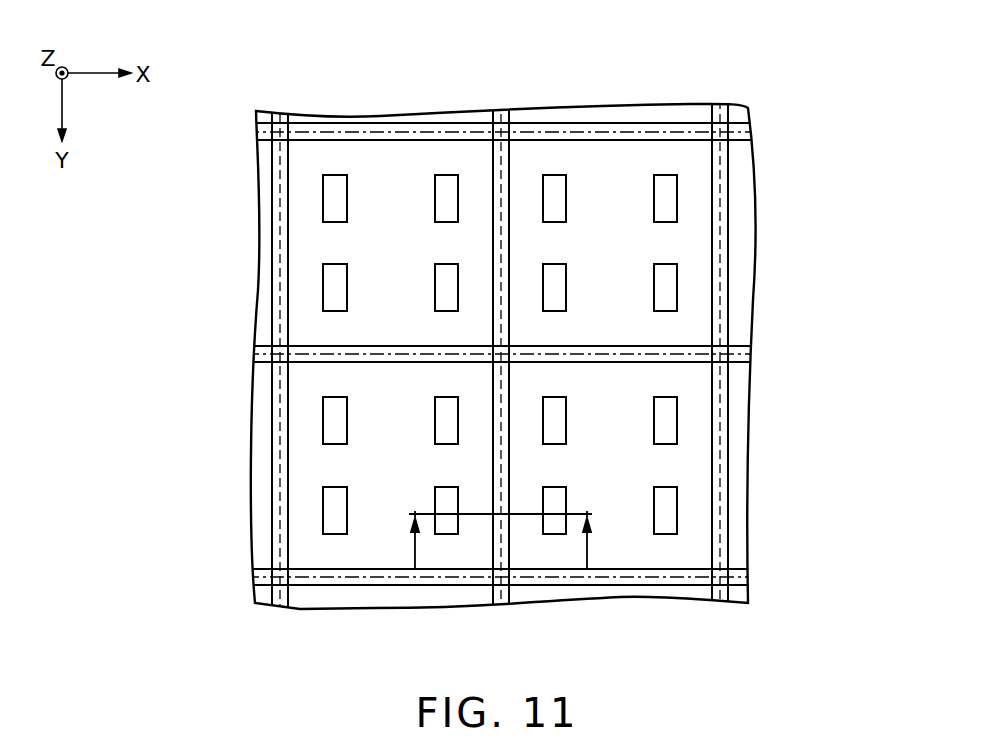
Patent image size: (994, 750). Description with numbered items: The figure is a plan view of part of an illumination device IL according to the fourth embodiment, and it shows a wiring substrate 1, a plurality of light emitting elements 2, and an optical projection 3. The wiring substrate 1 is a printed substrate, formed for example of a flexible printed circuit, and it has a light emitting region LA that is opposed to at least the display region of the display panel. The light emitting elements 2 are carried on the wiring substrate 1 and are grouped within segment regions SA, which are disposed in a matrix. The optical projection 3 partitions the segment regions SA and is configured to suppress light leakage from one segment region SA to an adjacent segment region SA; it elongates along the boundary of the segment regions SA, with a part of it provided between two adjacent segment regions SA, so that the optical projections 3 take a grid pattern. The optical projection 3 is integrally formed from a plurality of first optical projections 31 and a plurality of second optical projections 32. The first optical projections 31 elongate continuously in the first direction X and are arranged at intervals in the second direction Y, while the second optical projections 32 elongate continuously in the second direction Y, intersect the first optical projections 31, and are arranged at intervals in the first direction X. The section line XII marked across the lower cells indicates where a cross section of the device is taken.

The wiring substrate 1 is at (755, 540).
The light emitting elements 2 is at (348, 275).
The optical projection 3 is at (491, 316).
The first optical projections 31 is at (242, 128).
The second optical projections 32 is at (276, 97).
The segment regions SA is at (375, 131).
The illumination device IL is at (784, 81).
The light emitting region LA is at (750, 613).
The section line XII- XII is at (415, 547).